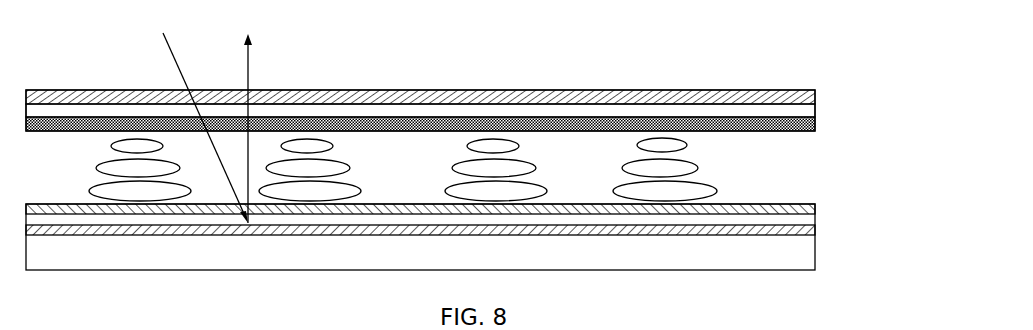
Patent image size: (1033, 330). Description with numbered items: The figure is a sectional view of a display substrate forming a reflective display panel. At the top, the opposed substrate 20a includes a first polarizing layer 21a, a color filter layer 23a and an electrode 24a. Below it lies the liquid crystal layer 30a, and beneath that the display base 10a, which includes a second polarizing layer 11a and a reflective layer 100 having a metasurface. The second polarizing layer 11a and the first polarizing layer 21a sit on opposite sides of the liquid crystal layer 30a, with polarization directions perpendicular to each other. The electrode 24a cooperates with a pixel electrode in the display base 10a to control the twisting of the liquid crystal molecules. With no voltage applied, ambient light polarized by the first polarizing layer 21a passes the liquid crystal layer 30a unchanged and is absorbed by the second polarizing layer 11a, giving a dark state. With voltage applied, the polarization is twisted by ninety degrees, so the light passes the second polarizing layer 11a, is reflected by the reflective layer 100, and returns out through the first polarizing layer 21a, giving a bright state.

The opposed substrate 20a is at (820, 90).
The first polarizing layer 21a is at (420, 72).
The color filter layer 23a is at (420, 77).
The electrode 24a is at (420, 83).
The liquid crystal layer 30a is at (432, 169).
The display base 10a is at (820, 204).
The second polarizing layer 11a is at (420, 194).
The reflective layer 100 is at (460, 198).